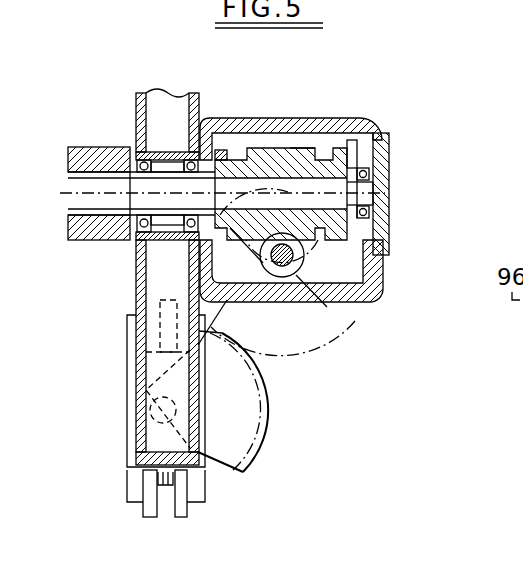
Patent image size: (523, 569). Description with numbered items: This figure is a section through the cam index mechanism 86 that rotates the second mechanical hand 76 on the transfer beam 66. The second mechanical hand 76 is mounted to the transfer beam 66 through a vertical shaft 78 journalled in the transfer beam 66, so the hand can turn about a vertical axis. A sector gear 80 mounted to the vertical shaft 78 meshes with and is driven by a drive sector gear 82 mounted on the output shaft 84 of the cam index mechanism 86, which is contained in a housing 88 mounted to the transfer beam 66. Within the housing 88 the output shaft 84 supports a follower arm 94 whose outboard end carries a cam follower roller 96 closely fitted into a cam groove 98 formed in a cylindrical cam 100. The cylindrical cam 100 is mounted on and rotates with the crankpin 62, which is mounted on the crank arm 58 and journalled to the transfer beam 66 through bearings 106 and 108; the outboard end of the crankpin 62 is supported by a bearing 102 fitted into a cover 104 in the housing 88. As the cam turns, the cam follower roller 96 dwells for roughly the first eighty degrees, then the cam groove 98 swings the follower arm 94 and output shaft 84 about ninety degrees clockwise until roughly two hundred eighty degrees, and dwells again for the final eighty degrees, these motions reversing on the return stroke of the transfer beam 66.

The crank arm 58 is at (88, 147).
The crankpin 62 is at (80, 190).
The transfer beam 66 is at (137, 116).
The second mechanical hand 76 is at (128, 487).
The vertical shaft 78 is at (145, 390).
The sector gear 80 is at (258, 432).
The drive sector gear 82 is at (330, 342).
The output shaft 84 is at (328, 307).
The cam index mechanism 86 is at (300, 143).
The housing 88 is at (375, 117).
The follower arm 94 is at (238, 247).
The cam follower roller 96 is at (244, 165).
The cam groove 98 is at (336, 130).
The cylindrical cam 100 is at (277, 147).
The bearing 102 is at (368, 167).
The cover 104 is at (392, 208).
The bearing 106 is at (138, 242).
The bearing 108 is at (167, 150).